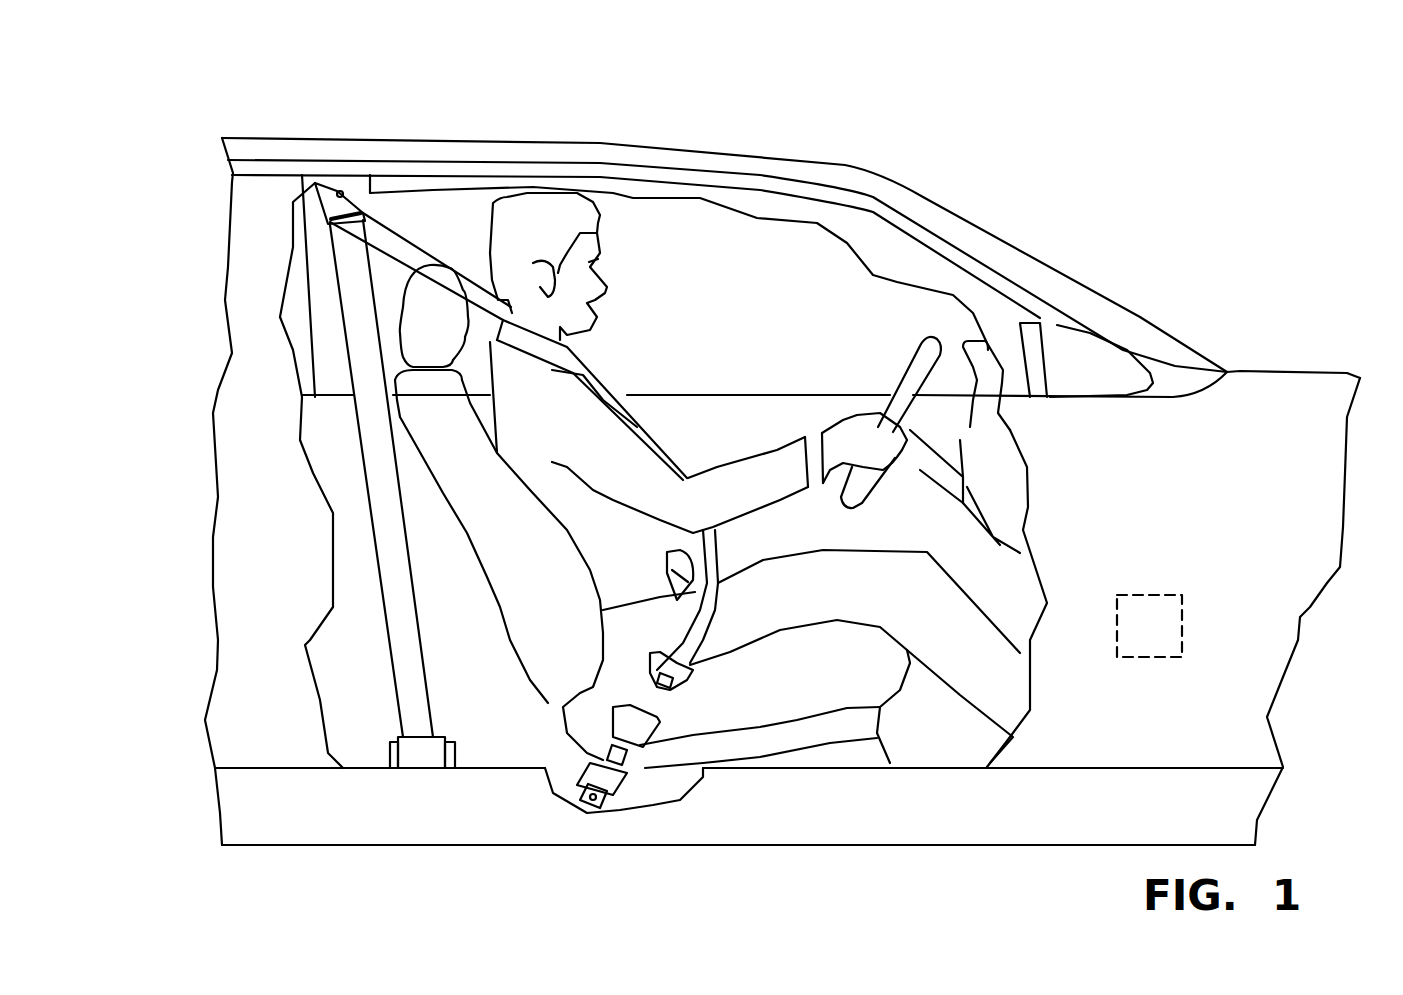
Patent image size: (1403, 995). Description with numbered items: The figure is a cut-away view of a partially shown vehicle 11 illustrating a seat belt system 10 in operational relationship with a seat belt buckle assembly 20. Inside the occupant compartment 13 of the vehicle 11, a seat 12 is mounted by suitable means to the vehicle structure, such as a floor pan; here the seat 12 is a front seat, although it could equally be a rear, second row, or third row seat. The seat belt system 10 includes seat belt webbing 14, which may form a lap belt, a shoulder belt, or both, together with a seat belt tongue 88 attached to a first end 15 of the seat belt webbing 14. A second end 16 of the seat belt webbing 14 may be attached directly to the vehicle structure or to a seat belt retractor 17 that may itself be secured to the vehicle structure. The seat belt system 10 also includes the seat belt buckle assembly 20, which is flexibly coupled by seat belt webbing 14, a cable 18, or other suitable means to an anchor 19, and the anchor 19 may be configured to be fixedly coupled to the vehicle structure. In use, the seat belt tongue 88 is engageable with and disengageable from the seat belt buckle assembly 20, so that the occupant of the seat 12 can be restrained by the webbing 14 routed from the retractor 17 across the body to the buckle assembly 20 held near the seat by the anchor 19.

The seat belt system 10 is at (440, 240).
The vehicle 11 is at (1034, 172).
The seat 12 is at (877, 686).
The occupant compartment 13 is at (764, 238).
The seat belt webbing 14 is at (673, 653).
The first end 15 is at (677, 667).
The second end 16 is at (407, 658).
The seat belt retractor 17 is at (413, 752).
The cable 18 is at (618, 768).
The anchor 19 is at (587, 795).
The seat belt buckle assembly 20 is at (638, 723).
The seat belt tongue 88 is at (653, 693).